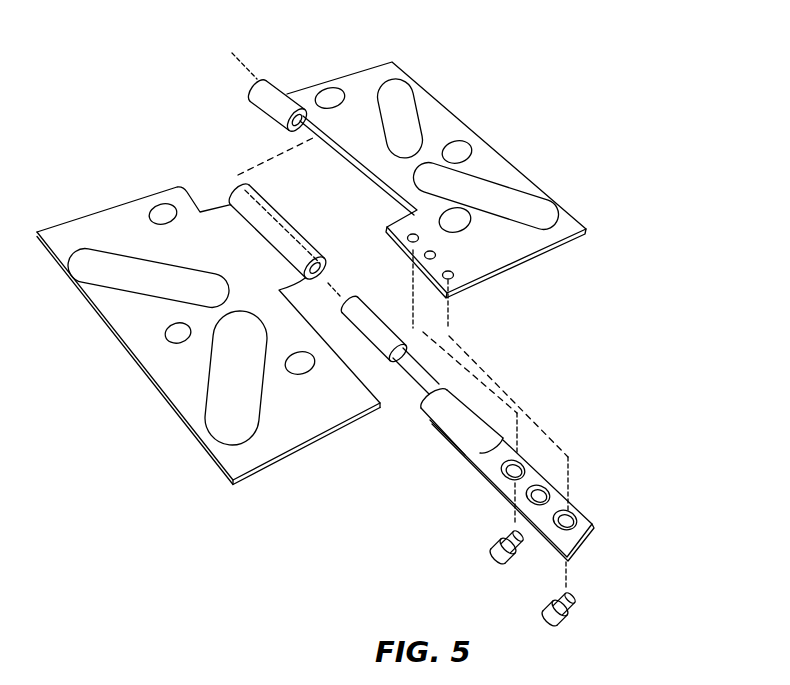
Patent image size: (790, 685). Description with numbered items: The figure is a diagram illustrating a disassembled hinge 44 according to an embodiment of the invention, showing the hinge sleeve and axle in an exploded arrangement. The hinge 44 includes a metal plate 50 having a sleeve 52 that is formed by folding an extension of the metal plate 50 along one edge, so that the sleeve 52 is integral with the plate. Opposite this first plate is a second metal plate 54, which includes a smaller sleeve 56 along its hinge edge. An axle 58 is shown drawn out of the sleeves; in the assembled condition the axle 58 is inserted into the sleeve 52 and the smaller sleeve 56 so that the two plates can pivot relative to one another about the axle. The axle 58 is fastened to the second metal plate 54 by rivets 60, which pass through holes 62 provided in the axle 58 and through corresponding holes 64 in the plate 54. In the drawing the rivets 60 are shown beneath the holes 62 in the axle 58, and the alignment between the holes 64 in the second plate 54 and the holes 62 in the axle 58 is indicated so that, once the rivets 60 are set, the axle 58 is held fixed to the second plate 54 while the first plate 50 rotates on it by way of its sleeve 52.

The hinge 44 is at (600, 158).
The metal plate 50 is at (163, 363).
The sleeve 52 is at (233, 190).
The second metal plate 54 is at (385, 62).
The smaller sleeve 56 is at (262, 82).
The axle 58 is at (371, 369).
The rivets 60 is at (495, 558).
The holes 62 is at (520, 463).
The holes 64 is at (405, 236).